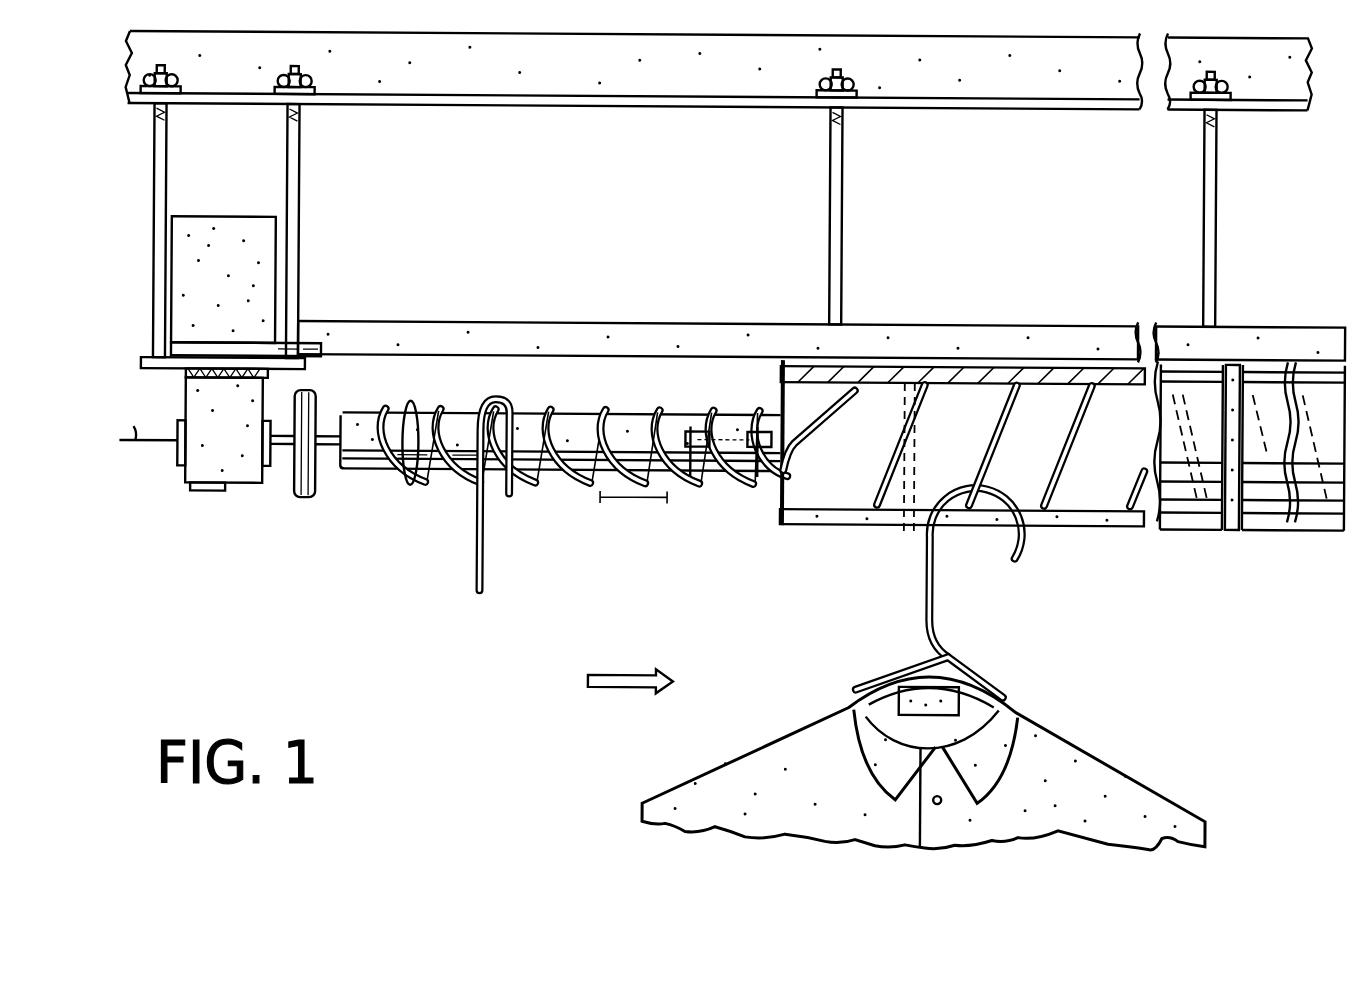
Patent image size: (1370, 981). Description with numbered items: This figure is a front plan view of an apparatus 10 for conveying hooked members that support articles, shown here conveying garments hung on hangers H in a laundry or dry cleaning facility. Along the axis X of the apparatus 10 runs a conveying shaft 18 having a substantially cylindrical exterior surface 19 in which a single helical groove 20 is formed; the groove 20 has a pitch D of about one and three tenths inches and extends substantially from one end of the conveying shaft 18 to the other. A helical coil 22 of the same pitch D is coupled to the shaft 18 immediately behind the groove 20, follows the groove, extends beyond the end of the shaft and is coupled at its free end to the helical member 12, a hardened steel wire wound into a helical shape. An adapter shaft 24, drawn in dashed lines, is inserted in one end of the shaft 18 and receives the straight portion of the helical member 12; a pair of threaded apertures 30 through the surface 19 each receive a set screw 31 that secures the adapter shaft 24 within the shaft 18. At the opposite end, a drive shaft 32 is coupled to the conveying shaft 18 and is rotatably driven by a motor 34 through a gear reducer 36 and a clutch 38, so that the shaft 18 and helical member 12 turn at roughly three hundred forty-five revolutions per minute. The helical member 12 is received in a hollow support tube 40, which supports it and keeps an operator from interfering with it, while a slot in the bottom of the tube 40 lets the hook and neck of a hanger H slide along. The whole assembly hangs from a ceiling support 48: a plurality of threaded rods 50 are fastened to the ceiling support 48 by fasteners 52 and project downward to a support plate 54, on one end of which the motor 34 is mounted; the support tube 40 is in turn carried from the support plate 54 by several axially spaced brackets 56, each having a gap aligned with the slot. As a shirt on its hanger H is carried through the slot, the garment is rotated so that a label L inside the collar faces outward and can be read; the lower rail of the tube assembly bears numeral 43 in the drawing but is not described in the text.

The apparatus 10 is at (1070, 31).
The helical member 12 is at (1003, 416).
The conveying shaft 18 is at (380, 471).
The cylindrical exterior surface 19 is at (455, 476).
The helical groove 20 is at (388, 407).
The helical coil 22 is at (486, 407).
The adapter shaft 24 is at (722, 478).
The threaded apertures 30 is at (693, 416).
The set screws 31 is at (693, 478).
The drive shaft 32 is at (330, 411).
The motor 34 is at (230, 216).
The gear reducer 36 is at (212, 458).
The clutch 38 is at (305, 496).
The support tube 40 is at (781, 520).
The bottom rail 43 is at (797, 520).
The ceiling support 48 is at (596, 93).
The threaded rods 50 is at (163, 155).
The fastener 52 is at (181, 84).
The support plate 54 is at (382, 320).
The brackets 56 is at (910, 532).
The hanger H is at (479, 564).
The label L is at (937, 692).
The pitch D is at (633, 512).
The axis X is at (145, 408).